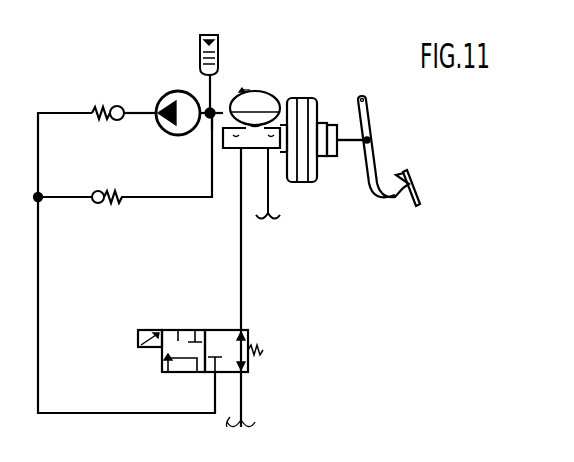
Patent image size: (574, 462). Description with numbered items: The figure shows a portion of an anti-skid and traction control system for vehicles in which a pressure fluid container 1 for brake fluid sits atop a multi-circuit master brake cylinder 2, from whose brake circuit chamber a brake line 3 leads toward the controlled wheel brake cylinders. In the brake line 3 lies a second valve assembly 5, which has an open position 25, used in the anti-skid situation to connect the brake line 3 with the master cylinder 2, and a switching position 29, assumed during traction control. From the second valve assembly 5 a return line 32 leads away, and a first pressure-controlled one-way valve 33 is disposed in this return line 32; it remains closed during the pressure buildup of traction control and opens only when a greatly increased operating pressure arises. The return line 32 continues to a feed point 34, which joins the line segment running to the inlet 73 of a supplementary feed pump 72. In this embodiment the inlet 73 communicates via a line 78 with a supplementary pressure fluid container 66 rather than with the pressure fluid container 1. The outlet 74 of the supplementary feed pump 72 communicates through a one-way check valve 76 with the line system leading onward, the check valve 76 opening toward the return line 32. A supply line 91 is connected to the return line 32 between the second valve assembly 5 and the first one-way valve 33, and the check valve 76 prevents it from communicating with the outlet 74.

The pressure fluid container 1 is at (263, 100).
The multi-circuit master brake cylinder 2 is at (238, 145).
The brake line 3 is at (243, 265).
The second valve assembly 5 is at (146, 330).
The open position 25 is at (238, 346).
The switching position 29 is at (178, 340).
The return line 32 is at (68, 198).
The first pressure-controlled one-way valve 33 is at (100, 203).
The feed point 34 is at (210, 124).
The supplementary pressure fluid container 66 is at (218, 53).
The supplementary feed pump 72 is at (186, 118).
The inlet 73 is at (202, 105).
The outlet 74 is at (157, 113).
The one-way check valve 76 is at (117, 106).
The line 78 is at (213, 100).
The supply line 91 is at (38, 142).